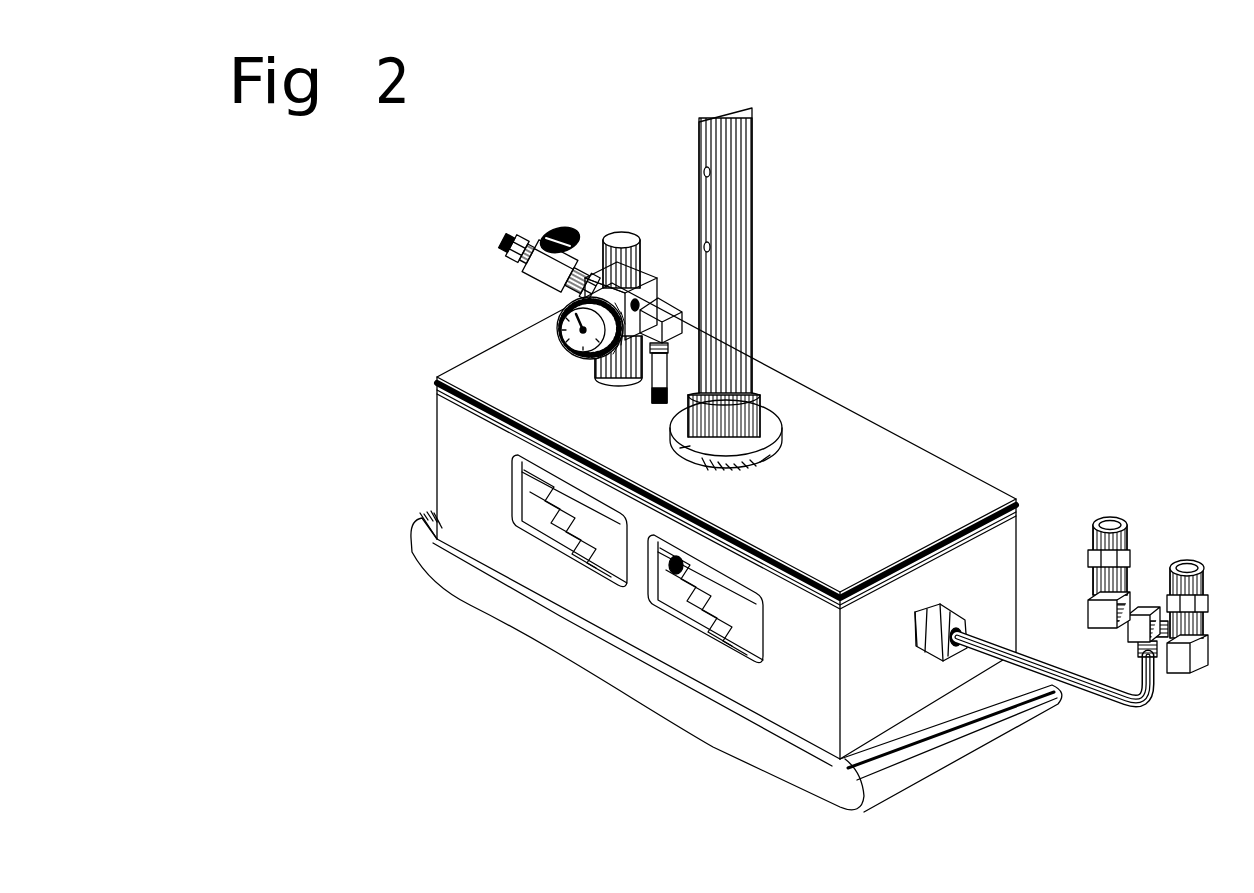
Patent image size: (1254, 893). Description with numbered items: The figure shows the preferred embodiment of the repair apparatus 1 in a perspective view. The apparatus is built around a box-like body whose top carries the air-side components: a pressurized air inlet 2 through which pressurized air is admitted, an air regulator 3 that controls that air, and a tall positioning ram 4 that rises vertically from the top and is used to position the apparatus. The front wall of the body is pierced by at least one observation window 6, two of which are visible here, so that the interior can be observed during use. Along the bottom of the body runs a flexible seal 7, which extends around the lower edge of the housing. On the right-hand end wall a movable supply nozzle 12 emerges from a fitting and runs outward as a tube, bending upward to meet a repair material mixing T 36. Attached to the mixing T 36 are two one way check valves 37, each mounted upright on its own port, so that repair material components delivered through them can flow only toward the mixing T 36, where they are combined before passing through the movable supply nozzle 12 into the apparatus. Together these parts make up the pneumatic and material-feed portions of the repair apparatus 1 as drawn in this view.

The repair apparatus 1 is at (428, 465).
The pressurized air inlet 2 is at (498, 227).
The air regulator 3 is at (560, 333).
The positioning ram 4 is at (762, 150).
The observation window 6 is at (712, 600).
The flexible seal 7 is at (686, 730).
The movable supply nozzle 12 is at (1100, 708).
The repair material mixing T 36 is at (1160, 655).
The one way check valves 37 is at (1187, 566).